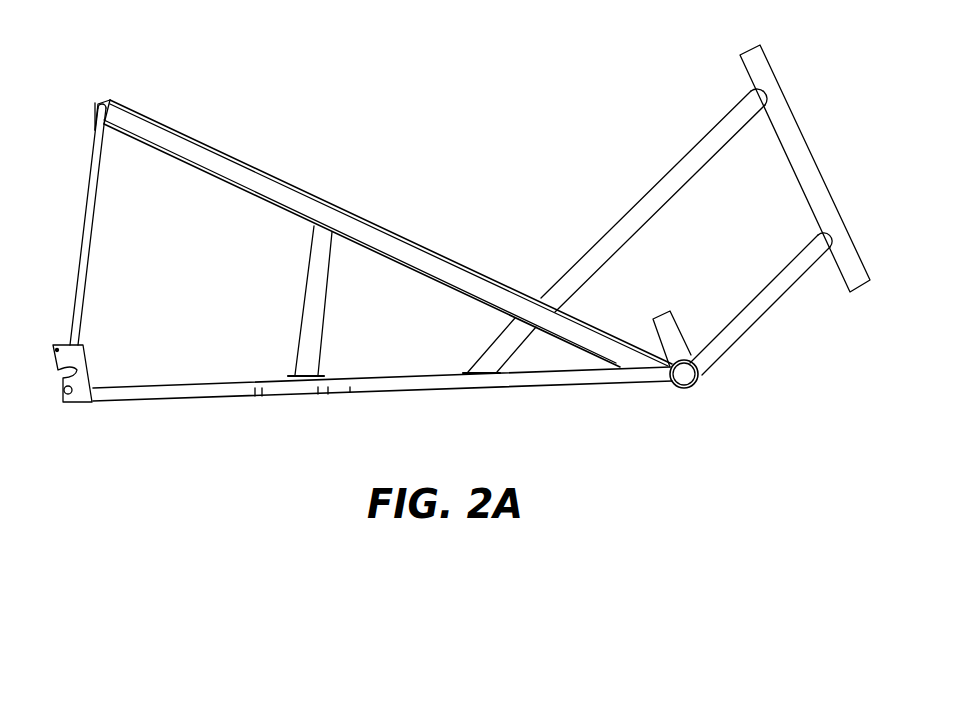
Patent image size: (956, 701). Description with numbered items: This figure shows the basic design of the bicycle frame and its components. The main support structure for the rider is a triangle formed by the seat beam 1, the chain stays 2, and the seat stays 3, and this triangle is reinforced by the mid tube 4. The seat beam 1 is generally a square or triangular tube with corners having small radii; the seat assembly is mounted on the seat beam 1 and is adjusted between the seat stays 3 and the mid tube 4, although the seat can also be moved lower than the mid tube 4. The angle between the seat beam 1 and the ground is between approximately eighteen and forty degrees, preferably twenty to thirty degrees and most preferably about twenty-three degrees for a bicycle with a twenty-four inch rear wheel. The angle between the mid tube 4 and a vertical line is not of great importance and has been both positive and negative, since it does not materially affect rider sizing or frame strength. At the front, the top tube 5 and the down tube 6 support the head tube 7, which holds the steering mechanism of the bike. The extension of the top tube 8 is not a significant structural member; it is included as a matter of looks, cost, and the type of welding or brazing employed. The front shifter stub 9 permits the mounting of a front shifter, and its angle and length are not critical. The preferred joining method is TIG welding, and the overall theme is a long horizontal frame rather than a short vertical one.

The seat beam 1 is at (418, 238).
The chain stays 2 is at (403, 390).
The seat stays 3 is at (96, 192).
The mid tube 4 is at (303, 283).
The top tube 5 is at (683, 158).
The down tube 6 is at (731, 349).
The head tube 7 is at (795, 117).
The extension of the top tube 8 is at (485, 353).
The front shifter stub 9 is at (680, 312).